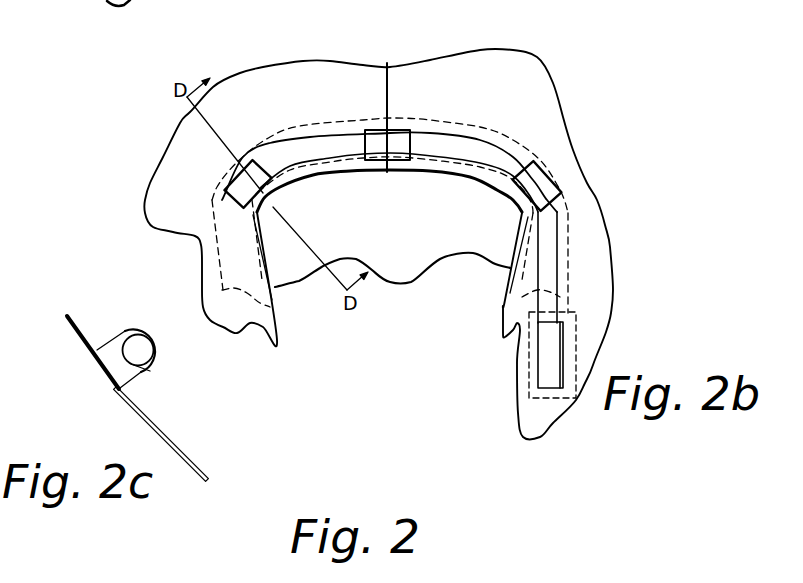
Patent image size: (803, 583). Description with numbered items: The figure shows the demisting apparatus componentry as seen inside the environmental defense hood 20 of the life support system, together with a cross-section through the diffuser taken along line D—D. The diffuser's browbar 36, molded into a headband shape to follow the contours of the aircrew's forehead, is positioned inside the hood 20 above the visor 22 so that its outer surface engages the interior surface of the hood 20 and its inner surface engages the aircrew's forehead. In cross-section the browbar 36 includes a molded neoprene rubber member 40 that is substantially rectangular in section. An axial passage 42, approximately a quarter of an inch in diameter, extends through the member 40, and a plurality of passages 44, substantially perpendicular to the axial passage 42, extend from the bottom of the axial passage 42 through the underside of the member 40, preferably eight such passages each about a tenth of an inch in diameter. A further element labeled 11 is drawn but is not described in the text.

In FIG. 2B, the electronic module 11 is at (551, 400).
In FIG. 2B, the hood 20 is at (470, 80).
In FIG. 2C, the hood 20 is at (77, 335).
In FIG. 2B, the visor 22 is at (427, 252).
In FIG. 2C, the visor 22 is at (147, 432).
In FIG. 2B, the browbar 36 is at (480, 150).
In FIG. 2C, the browbar 36 is at (112, 352).
In FIG. 2C, the molded neoprene rubber member 40 is at (119, 331).
In FIG. 2C, the axial passage 42 is at (139, 350).
In FIG. 2C, the passages 44 is at (139, 368).